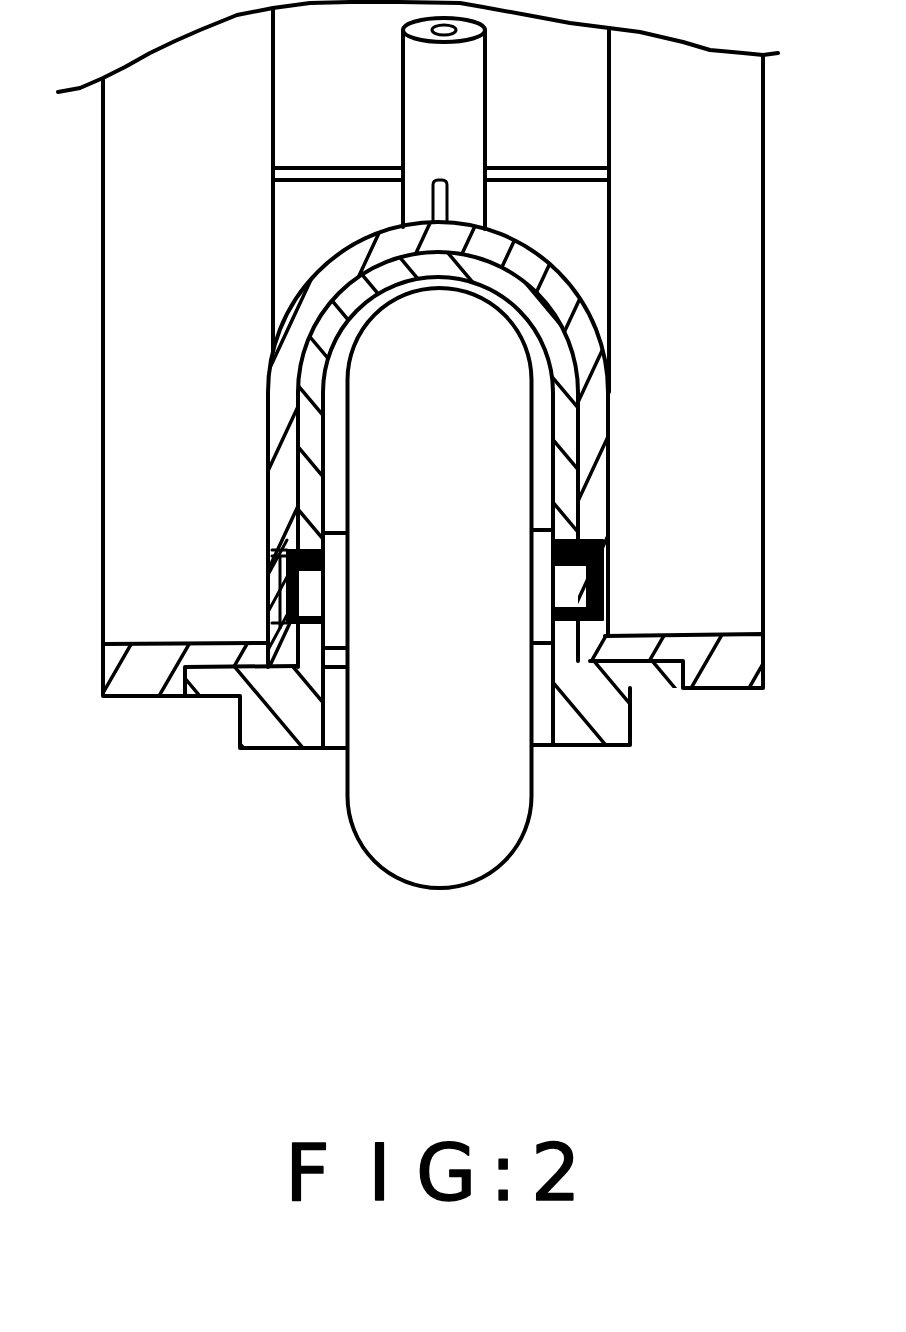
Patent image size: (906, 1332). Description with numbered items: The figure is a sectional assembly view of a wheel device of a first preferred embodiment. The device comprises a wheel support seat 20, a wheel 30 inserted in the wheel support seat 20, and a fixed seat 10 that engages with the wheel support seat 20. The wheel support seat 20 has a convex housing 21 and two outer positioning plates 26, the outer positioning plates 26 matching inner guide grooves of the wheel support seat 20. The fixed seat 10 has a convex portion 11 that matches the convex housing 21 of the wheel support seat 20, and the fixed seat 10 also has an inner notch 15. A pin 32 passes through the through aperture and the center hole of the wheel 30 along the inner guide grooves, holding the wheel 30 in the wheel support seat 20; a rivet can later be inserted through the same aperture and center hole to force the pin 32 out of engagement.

The fixed seat 10 is at (132, 677).
The convex portion 11 is at (283, 338).
The inner notch 15 is at (268, 548).
The wheel support seat 20 is at (278, 723).
The convex housing 21 is at (565, 407).
The outer positioning plates 26 is at (582, 545).
The wheel 30 is at (443, 863).
The pin 32 is at (272, 580).